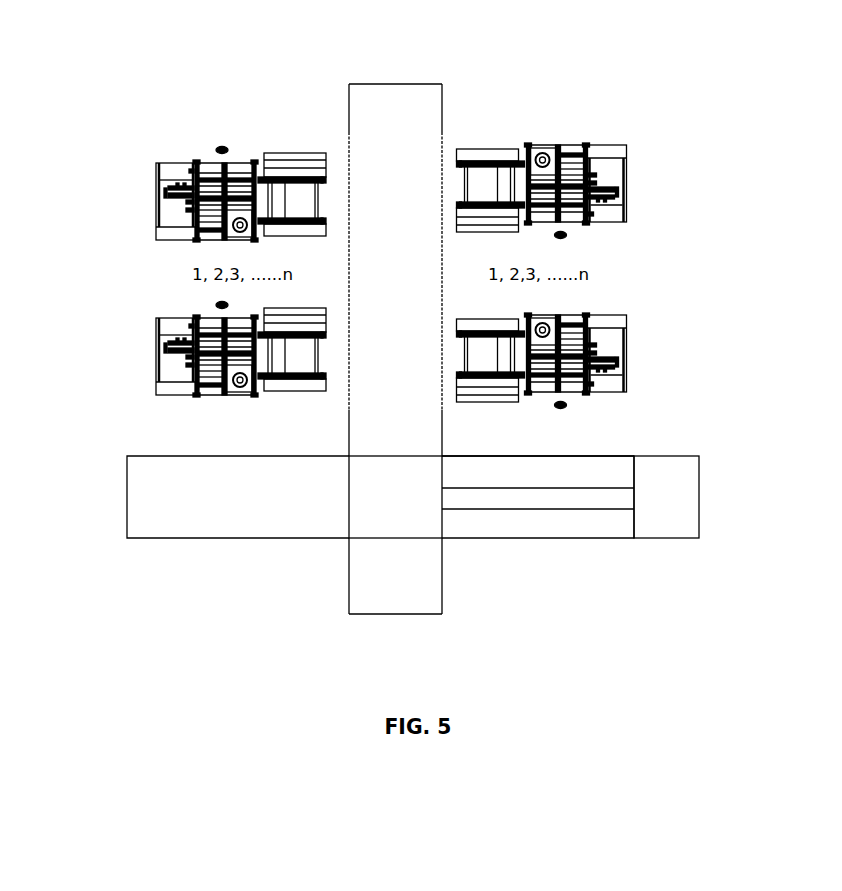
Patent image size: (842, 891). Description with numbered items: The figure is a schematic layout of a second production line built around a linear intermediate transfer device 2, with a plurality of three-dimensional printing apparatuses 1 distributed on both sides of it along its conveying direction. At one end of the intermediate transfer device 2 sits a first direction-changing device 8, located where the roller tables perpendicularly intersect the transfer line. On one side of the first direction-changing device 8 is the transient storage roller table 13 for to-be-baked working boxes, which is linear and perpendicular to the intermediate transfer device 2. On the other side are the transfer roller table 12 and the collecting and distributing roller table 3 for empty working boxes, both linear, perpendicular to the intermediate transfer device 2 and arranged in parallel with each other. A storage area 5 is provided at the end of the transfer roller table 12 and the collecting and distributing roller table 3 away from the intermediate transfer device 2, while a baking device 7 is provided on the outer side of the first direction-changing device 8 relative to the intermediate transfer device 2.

The 3D printing apparatus 1 is at (165, 217).
The intermediate transfer device 2 is at (386, 162).
The collecting and distributing roller table for empty working box 3 is at (542, 529).
The storage area 5 is at (662, 508).
The baking device 7 is at (391, 570).
The first direction-changing device 8 is at (386, 493).
The transfer roller table 12 is at (485, 473).
The transient storage roller table for to-be-baked working box 13 is at (158, 512).